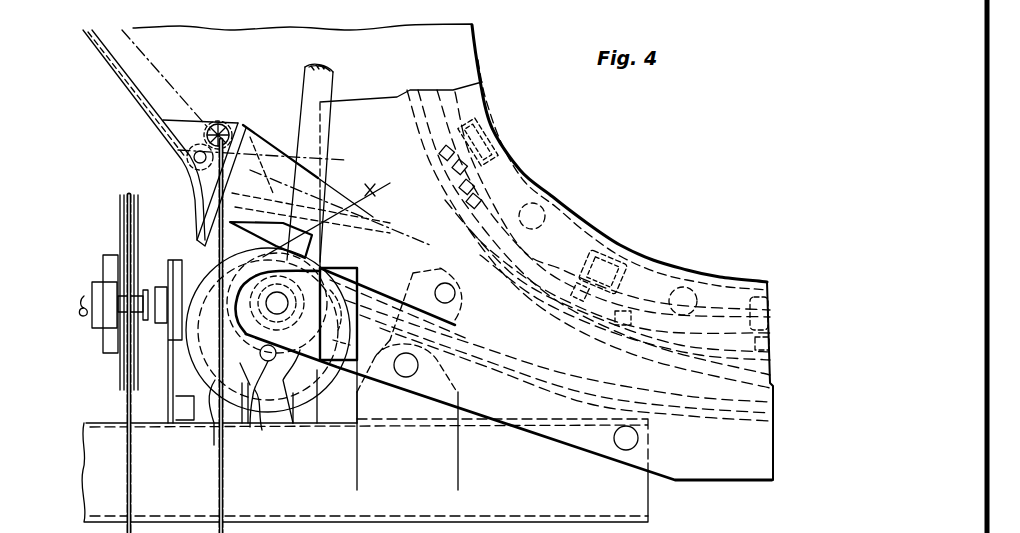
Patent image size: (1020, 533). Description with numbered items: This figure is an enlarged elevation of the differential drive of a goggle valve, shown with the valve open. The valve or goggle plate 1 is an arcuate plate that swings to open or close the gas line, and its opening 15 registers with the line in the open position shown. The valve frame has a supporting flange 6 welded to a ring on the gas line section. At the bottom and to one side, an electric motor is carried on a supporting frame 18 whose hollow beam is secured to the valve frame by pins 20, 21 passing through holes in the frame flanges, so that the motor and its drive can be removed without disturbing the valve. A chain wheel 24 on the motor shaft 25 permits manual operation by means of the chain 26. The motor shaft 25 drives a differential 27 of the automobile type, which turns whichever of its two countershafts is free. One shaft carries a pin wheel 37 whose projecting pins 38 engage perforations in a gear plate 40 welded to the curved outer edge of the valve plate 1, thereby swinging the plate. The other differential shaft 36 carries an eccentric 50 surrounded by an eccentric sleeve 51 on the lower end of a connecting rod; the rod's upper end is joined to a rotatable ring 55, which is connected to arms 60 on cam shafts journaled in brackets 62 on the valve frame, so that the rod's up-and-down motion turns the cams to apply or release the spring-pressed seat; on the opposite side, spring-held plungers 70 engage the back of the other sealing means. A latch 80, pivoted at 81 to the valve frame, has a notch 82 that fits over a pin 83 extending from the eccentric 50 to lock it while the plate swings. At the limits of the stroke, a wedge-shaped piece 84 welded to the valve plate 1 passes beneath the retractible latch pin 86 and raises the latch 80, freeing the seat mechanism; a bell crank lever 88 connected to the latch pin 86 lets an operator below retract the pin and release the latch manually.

The valve or goggle plate 1 is at (143, 63).
The supporting flange 6 is at (365, 105).
The opening 15 is at (481, 62).
The supporting frame 18 is at (96, 500).
The pin 20 is at (625, 444).
The pin 21 is at (408, 378).
The chain wheel 24 is at (121, 215).
The motor shaft 25 is at (85, 300).
The chain 26 is at (127, 480).
The differential 27 is at (203, 268).
The countershaft 36 is at (277, 303).
The pin wheel 37 is at (293, 426).
The projecting pins 38 is at (325, 345).
The gear plate 40 is at (140, 93).
The eccentric 50 is at (247, 328).
The eccentric sleeve 51 is at (214, 420).
The rotatable ring 55 is at (483, 241).
The arms 60 is at (449, 191).
The brackets 62 is at (510, 161).
The spring-held plungers 70 is at (545, 207).
The latch 80 is at (260, 140).
The latch pivot 81 is at (457, 290).
The notch 82 is at (377, 183).
The pin 83 is at (254, 420).
The wedge-shaped piece 84 is at (193, 140).
The retractible latch pin 86 is at (214, 124).
The bell crank lever 88 is at (193, 151).